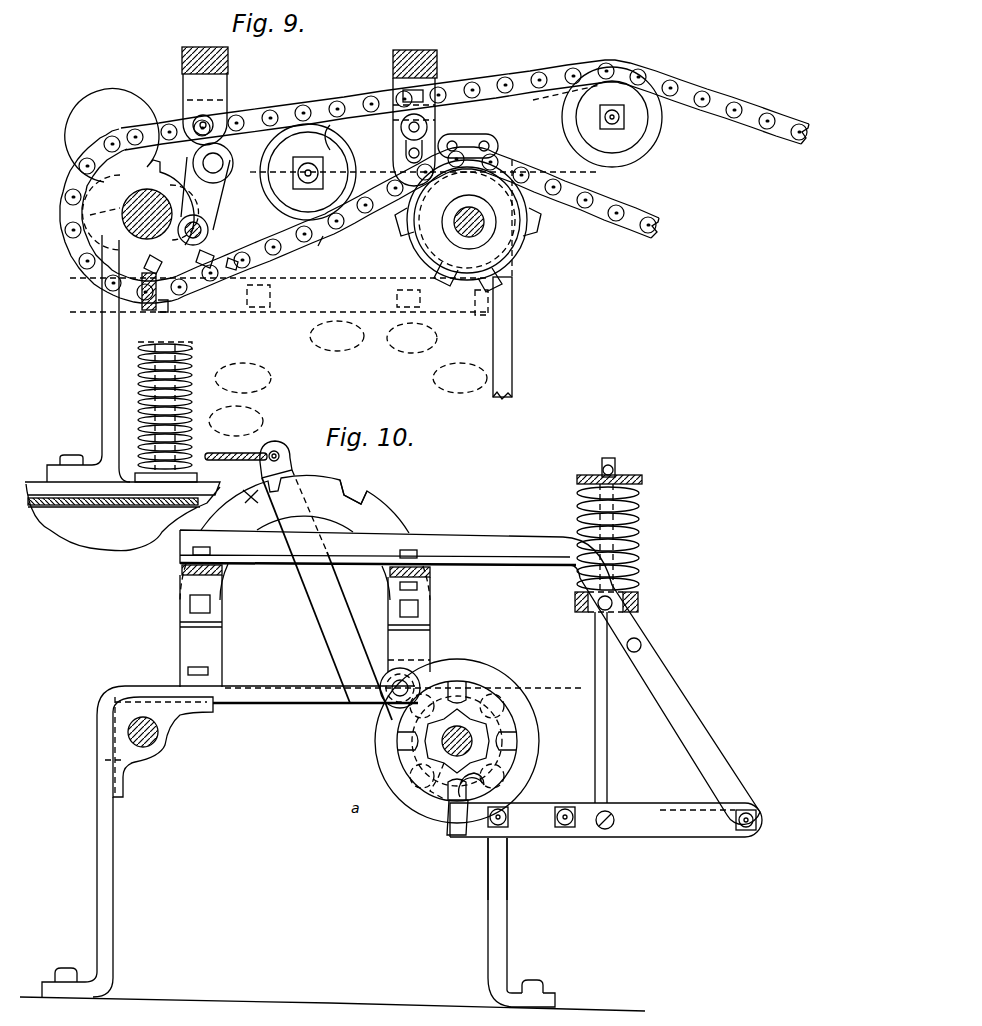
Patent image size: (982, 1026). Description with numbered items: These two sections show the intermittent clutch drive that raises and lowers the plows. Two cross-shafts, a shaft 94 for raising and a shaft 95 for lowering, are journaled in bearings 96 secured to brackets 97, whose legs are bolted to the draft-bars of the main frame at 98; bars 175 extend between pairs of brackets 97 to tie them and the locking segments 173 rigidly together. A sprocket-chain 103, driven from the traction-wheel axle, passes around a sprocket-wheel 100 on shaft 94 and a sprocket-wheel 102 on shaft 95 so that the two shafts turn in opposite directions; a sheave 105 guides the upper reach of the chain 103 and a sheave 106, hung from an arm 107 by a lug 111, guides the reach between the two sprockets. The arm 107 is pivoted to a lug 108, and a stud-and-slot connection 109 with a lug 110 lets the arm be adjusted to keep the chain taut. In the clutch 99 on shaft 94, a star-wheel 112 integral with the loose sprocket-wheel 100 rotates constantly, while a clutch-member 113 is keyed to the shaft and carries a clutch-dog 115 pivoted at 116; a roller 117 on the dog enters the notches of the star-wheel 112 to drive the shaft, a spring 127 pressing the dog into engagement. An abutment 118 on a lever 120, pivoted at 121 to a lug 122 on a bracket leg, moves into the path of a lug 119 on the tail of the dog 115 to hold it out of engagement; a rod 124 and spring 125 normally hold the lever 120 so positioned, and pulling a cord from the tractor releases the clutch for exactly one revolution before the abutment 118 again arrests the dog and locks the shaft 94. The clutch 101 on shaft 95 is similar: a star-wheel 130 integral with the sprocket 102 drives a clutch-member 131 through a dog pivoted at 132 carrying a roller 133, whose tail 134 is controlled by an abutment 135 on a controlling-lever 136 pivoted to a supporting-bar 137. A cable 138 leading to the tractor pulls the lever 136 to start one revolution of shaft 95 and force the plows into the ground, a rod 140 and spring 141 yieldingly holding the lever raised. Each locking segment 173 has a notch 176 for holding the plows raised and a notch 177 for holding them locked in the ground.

In FIG. 9, the cross-shaft 94 is at (123, 217).
In FIG. 10, the cross-shaft 94 is at (222, 748).
In FIG. 9, the cross-shaft 95 is at (487, 230).
In FIG. 10, the cross-shaft 95 is at (480, 733).
In FIG. 10, the bearings 96 is at (120, 763).
In FIG. 9, the brackets 97 is at (103, 430).
In FIG. 10, the brackets 97 is at (113, 905).
In FIG. 9, the bolted connection 98 is at (63, 460).
In FIG. 10, the bolted connection 98 is at (61, 968).
In FIG. 9, the clutch 99 is at (148, 180).
In FIG. 9, the sprocket-wheel 100 is at (125, 163).
In FIG. 10, the clutch 101 is at (425, 706).
In FIG. 9, the sprocket-wheel 102 is at (530, 228).
In FIG. 9, the sprocket-chain 103 is at (328, 249).
In FIG. 9, the sheave 105 is at (648, 138).
In FIG. 9, the sheave 106 is at (333, 200).
In FIG. 9, the arm 107 is at (533, 123).
In FIG. 9, the lug 108 is at (208, 104).
In FIG. 9, the stud-and-slot connection 109 is at (415, 105).
In FIG. 9, the lug 110 is at (437, 128).
In FIG. 9, the lug 111 is at (330, 150).
In FIG. 9, the star-wheel 112 is at (90, 213).
In FIG. 9, the clutch-member 113 is at (157, 268).
In FIG. 9, the clutch-dog 115 is at (206, 266).
In FIG. 9, the pivot 116 is at (240, 264).
In FIG. 9, the roller 117 is at (190, 205).
In FIG. 9, the abutment 118 is at (147, 312).
In FIG. 9, the lug 119 is at (140, 302).
In FIG. 9, the lever 120 is at (336, 305).
In FIG. 9, the pivot 121 is at (407, 300).
In FIG. 9, the lug 122 is at (462, 302).
In FIG. 9, the rod 124 is at (178, 348).
In FIG. 9, the spring 125 is at (195, 421).
In FIG. 9, the spring 127 is at (140, 298).
In FIG. 10, the star-wheel 130 is at (539, 705).
In FIG. 10, the clutch-member 131 is at (490, 684).
In FIG. 10, the pivot 132 is at (413, 753).
In FIG. 10, the roller 133 is at (413, 678).
In FIG. 10, the tail or lug 134 is at (488, 890).
In FIG. 10, the abutment 135 is at (460, 833).
In FIG. 10, the controlling-lever 136 is at (332, 637).
In FIG. 10, the supporting-bar 137 is at (670, 700).
In FIG. 10, the cable or wire 138 is at (248, 462).
In FIG. 10, the rod 140 is at (607, 748).
In FIG. 10, the spring 141 is at (637, 527).
In FIG. 10, the locking segment 173 is at (378, 515).
In FIG. 9, the bars 175 is at (182, 70).
In FIG. 10, the bars 175 is at (182, 575).
In FIG. 10, the notch 176 is at (260, 514).
In FIG. 10, the notch 177 is at (352, 494).